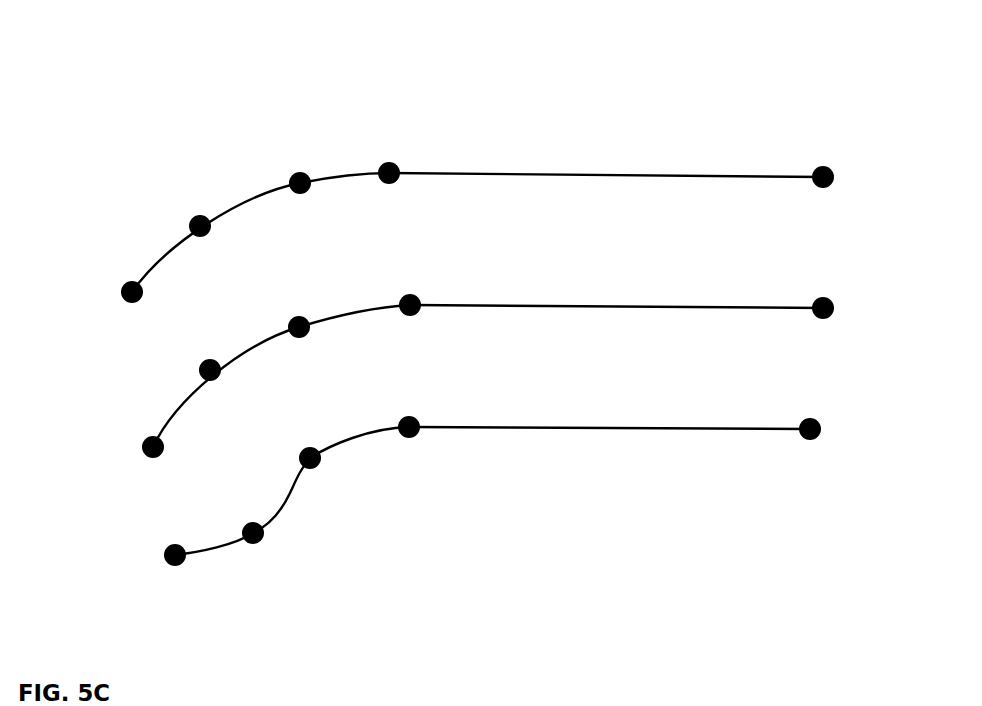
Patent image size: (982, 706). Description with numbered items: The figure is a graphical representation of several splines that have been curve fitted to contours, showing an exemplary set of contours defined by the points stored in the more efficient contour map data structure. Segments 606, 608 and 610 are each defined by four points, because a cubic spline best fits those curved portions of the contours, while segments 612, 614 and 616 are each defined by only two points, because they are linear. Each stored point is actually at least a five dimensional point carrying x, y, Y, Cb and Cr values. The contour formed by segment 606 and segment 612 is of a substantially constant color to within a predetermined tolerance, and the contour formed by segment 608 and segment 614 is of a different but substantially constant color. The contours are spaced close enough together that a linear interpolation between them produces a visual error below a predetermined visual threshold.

The segment 606 is at (260, 198).
The segment 608 is at (257, 343).
The segment 610 is at (288, 505).
The segment 612 is at (478, 172).
The segment 614 is at (460, 305).
The segment 616 is at (637, 428).